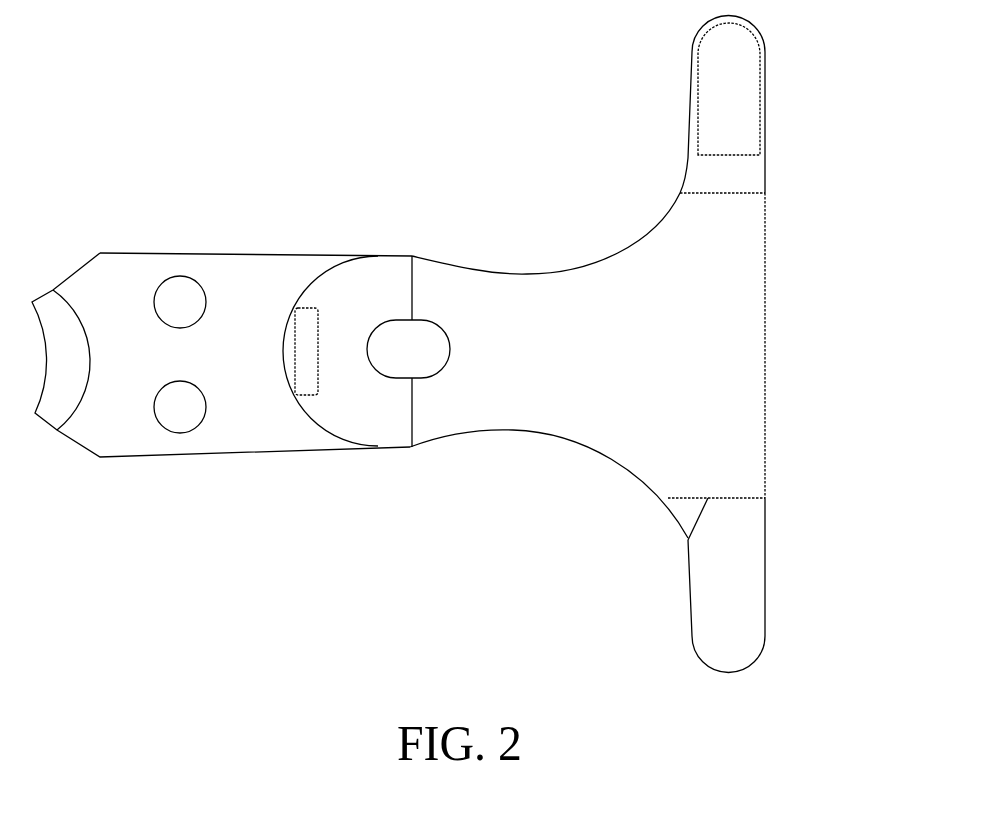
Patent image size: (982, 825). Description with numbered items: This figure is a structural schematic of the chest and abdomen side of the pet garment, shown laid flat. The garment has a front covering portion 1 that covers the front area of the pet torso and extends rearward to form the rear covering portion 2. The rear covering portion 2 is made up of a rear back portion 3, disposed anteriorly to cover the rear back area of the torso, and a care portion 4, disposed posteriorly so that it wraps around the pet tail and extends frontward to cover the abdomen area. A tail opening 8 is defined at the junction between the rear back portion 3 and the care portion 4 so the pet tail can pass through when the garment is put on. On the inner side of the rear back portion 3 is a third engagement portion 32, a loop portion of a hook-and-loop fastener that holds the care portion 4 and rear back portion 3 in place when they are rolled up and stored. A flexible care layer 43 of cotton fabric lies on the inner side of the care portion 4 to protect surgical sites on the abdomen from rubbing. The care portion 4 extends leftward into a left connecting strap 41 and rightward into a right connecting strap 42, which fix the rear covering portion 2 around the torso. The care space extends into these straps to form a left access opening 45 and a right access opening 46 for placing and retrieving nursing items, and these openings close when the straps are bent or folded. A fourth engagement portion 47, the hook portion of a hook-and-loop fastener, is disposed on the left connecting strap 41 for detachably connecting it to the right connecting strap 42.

The front covering portion 1 is at (110, 232).
The rear covering portion 2 is at (275, 220).
The rear back portion 3 is at (358, 423).
The third engagement portion 32 is at (298, 357).
The tail opening 8 is at (404, 345).
The care portion 4 is at (557, 435).
The left connecting strap 41 is at (745, 167).
The right connecting strap 42 is at (737, 587).
The flexible care layer 43 is at (732, 353).
The left access opening 45 is at (697, 192).
The right access opening 46 is at (690, 538).
The fourth engagement portion 47 is at (735, 72).